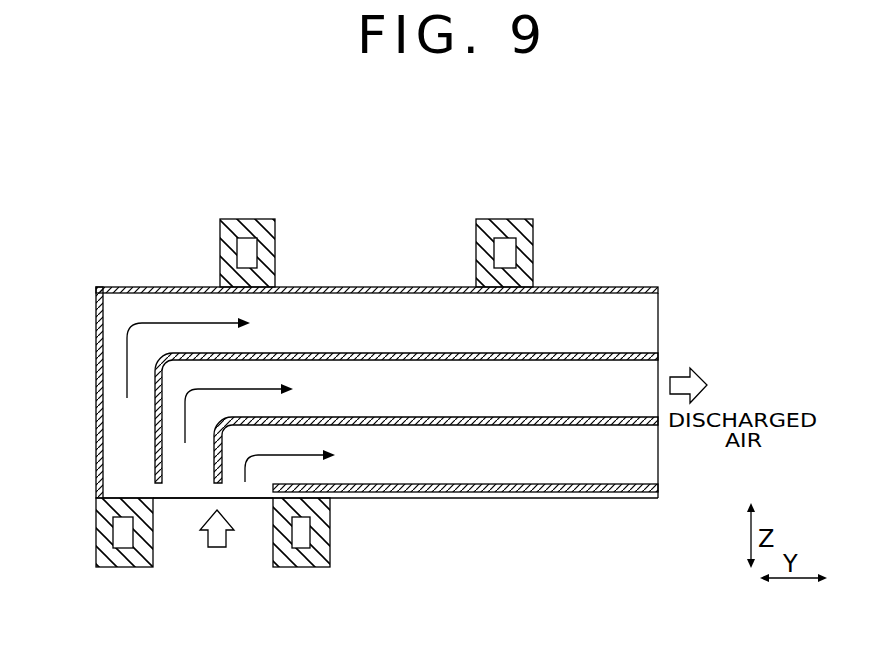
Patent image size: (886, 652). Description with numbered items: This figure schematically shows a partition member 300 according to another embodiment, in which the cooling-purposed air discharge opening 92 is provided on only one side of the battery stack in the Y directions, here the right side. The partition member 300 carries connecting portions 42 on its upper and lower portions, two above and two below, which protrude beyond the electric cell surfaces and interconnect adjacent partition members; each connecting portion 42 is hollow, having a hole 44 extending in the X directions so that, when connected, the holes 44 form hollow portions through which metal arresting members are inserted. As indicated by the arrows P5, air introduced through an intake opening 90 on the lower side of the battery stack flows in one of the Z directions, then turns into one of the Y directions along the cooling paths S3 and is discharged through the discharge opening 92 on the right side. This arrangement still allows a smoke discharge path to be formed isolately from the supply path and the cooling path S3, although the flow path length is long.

The partition member 300 is at (656, 282).
The cooling-purposed air discharge opening 92 is at (670, 345).
The intake opening 90 is at (173, 510).
The connecting portion 42 is at (228, 236).
The hole 44 is at (246, 257).
The arrows P5 is at (192, 322).
The cooling path S3 is at (441, 337).